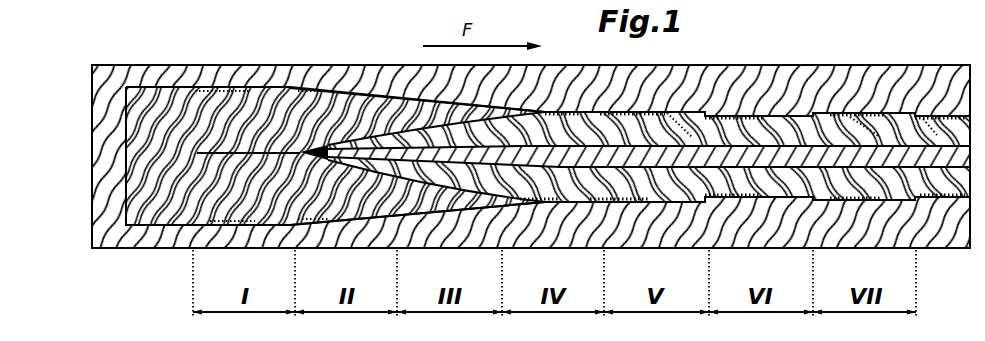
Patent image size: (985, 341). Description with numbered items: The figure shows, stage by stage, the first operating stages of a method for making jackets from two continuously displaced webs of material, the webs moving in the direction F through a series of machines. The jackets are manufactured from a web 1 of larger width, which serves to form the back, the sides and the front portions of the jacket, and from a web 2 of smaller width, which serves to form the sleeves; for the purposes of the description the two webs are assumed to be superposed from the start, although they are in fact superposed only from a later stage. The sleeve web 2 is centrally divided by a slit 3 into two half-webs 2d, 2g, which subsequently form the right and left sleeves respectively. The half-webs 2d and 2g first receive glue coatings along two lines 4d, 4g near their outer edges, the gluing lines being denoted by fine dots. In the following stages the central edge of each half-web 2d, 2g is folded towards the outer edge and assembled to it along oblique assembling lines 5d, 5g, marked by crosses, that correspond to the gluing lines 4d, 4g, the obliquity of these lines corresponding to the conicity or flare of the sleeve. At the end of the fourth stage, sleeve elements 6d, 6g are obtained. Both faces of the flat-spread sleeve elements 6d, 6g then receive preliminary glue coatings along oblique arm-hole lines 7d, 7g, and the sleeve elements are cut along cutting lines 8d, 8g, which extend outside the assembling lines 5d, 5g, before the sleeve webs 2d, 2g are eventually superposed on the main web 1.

The web 1 is at (102, 224).
The web 2 is at (128, 152).
The slit 3 is at (243, 153).
The half-web 2g is at (275, 113).
The half-web 2d is at (231, 222).
The gluing line 4g is at (207, 90).
The gluing line 4d is at (205, 220).
The assembling line 5g is at (545, 112).
The assembling line 5d is at (525, 193).
The sleeve element 6g is at (663, 123).
The sleeve element 6d is at (592, 185).
The arm-hole line 7g is at (697, 125).
The arm-hole line 7d is at (695, 183).
The cutting line 8g is at (838, 113).
The cutting line 8d is at (733, 200).